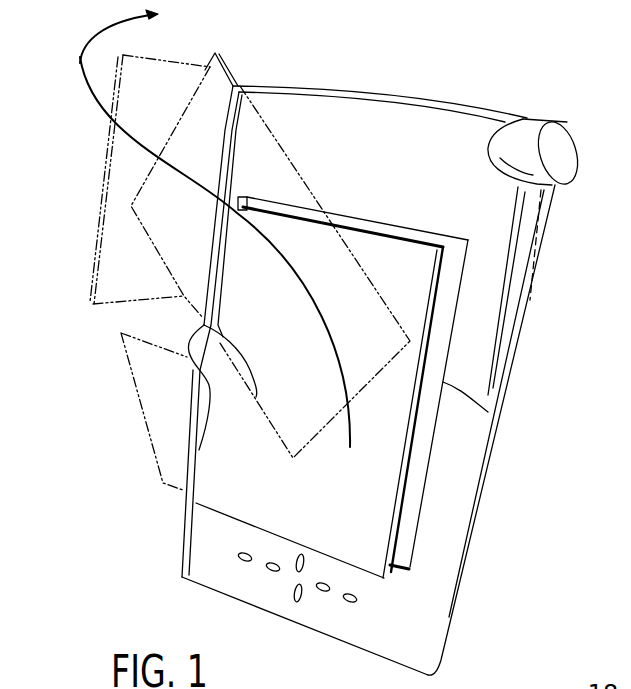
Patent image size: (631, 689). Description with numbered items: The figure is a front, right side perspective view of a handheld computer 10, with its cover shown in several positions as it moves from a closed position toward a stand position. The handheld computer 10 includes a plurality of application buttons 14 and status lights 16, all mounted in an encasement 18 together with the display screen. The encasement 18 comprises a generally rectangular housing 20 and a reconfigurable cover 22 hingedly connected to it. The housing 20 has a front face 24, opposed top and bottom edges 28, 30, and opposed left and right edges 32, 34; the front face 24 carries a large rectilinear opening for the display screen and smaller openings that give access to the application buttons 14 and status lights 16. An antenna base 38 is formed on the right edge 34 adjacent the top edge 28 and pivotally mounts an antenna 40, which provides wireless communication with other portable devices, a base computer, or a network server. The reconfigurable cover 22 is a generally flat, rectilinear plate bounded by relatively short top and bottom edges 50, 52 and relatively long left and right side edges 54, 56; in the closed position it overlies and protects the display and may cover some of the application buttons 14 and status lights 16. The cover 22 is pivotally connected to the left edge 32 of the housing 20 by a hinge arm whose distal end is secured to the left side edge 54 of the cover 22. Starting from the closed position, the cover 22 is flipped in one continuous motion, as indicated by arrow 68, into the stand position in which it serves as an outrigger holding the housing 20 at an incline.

The handheld computer 10 is at (420, 64).
The application buttons 14 is at (275, 562).
The status lights 16 is at (302, 560).
The encasement 18 is at (496, 110).
The housing 20 is at (360, 90).
The reconfigurable cover 22 is at (435, 442).
The front face 24 is at (303, 117).
The top edge 28 is at (455, 102).
The bottom edge 30 is at (248, 606).
The left edge 32 is at (182, 525).
The right edge 34 is at (466, 570).
The antenna base 38 is at (563, 121).
The antenna 40 is at (540, 258).
The top edge 50 is at (372, 234).
The bottom edge 52 is at (230, 518).
The left side edge 54 is at (187, 448).
The right side edge 56 is at (488, 412).
The arrow 68 is at (80, 63).